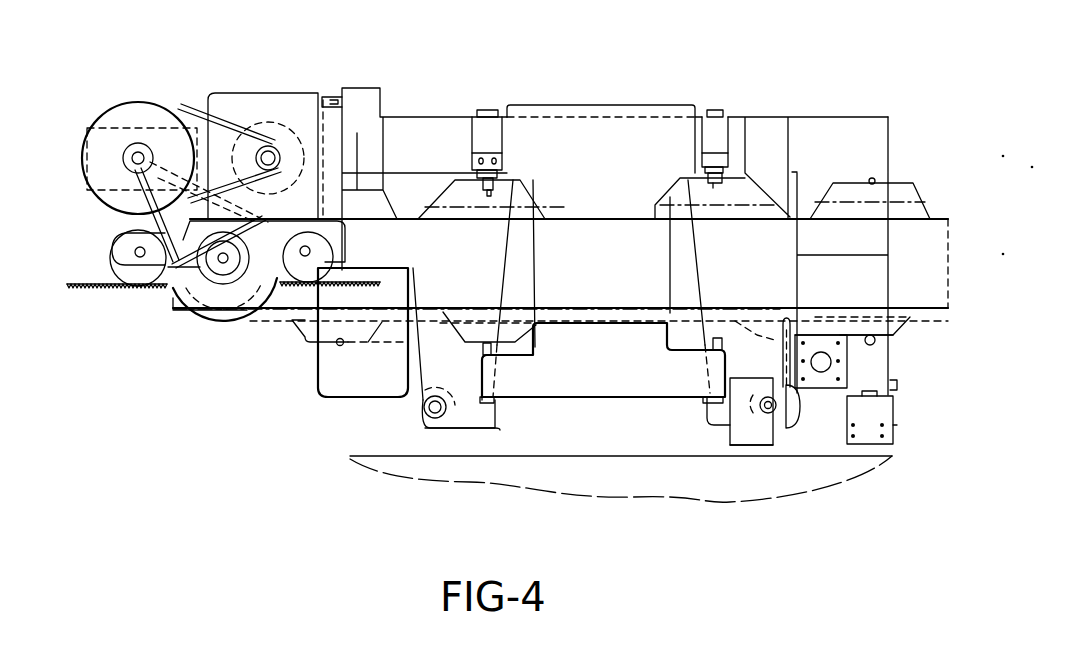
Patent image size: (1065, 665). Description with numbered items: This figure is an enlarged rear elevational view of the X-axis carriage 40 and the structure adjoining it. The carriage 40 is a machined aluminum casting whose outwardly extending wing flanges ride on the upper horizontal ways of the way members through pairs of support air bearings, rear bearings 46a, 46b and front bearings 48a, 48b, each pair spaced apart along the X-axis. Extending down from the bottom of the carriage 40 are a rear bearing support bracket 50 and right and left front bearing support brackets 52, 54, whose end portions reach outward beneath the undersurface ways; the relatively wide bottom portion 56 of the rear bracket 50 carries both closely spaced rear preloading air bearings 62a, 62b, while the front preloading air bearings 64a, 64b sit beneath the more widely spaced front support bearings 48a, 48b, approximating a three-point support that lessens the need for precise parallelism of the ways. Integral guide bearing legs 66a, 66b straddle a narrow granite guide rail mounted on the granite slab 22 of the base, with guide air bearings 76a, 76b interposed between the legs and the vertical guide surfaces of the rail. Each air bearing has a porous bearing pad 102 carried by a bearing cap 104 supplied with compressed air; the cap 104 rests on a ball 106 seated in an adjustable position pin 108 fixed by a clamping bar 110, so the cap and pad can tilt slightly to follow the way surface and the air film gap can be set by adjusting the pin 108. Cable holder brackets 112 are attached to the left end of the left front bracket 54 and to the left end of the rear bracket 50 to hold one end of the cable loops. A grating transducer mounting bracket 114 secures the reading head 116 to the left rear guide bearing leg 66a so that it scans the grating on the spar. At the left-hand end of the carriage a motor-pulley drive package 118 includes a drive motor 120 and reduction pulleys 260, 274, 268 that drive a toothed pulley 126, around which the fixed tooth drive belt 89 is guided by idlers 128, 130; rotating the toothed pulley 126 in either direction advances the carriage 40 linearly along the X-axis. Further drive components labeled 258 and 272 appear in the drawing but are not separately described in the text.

The granite slab 22 is at (350, 456).
The X-axis carriage 40 is at (633, 67).
The rear support air bearing 46a is at (758, 193).
The rear support air bearing 46b is at (450, 192).
The front support air bearing 48a is at (907, 180).
The front support air bearing 48b is at (383, 220).
The rear bearing support bracket 50 is at (670, 295).
The right front bearing support bracket 52 is at (318, 393).
The left front bearing support bracket 54 is at (890, 367).
The bottom portion of rear bracket 56 is at (628, 374).
The rear preloading air bearing 62a is at (734, 312).
The rear preloading air bearing 62b is at (466, 332).
The front preloading air bearing 64a is at (903, 328).
The front preloading air bearing 64b is at (298, 336).
The left rear guide bearing leg 66a is at (712, 424).
The guide bearing leg 66b is at (500, 425).
The guide air bearing 76a is at (786, 431).
The guide air bearing 76b is at (413, 408).
The fixed tooth drive belt 89 is at (97, 292).
The porous bearing pad 102 is at (541, 223).
The bearing cap 104 is at (546, 206).
The ball 106 is at (489, 199).
The adjustable position pin 108 is at (500, 172).
The clamping bar 110 is at (481, 151).
The cable holder bracket 112 is at (729, 449).
The grating transducer mounting bracket 114 is at (825, 365).
The reading head 116 is at (827, 395).
The motor-pulley drive package 118 is at (190, 97).
The drive motor 120 is at (262, 117).
The toothed pulley 126 is at (182, 267).
The idler 128 is at (110, 258).
The idler 130 is at (355, 257).
The drive pulley 258 is at (274, 145).
The reduction pulley 260 is at (142, 97).
The reduction pulley 268 is at (132, 150).
The drive rod 272 is at (122, 232).
The reduction pulley 274 is at (245, 320).